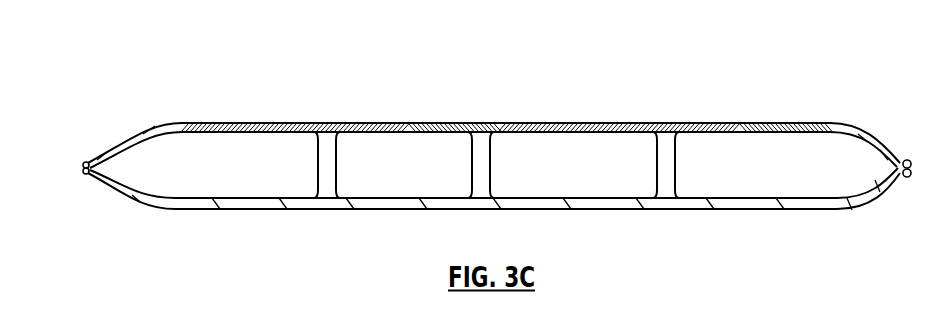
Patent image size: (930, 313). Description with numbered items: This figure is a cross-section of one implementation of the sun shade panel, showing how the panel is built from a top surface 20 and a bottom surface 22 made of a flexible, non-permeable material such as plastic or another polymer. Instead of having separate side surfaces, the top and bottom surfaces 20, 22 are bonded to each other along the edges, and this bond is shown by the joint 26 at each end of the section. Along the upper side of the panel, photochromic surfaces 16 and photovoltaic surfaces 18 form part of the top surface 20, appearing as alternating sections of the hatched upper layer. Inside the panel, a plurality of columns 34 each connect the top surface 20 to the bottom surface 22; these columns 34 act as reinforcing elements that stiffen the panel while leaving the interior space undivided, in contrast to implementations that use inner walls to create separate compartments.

The photochromic surface 16 is at (423, 123).
The photovoltaic surface 18 is at (208, 123).
The top surface 20 is at (153, 123).
The bottom surface 22 is at (247, 210).
The joint 26 is at (86, 162).
The column 34 is at (667, 165).